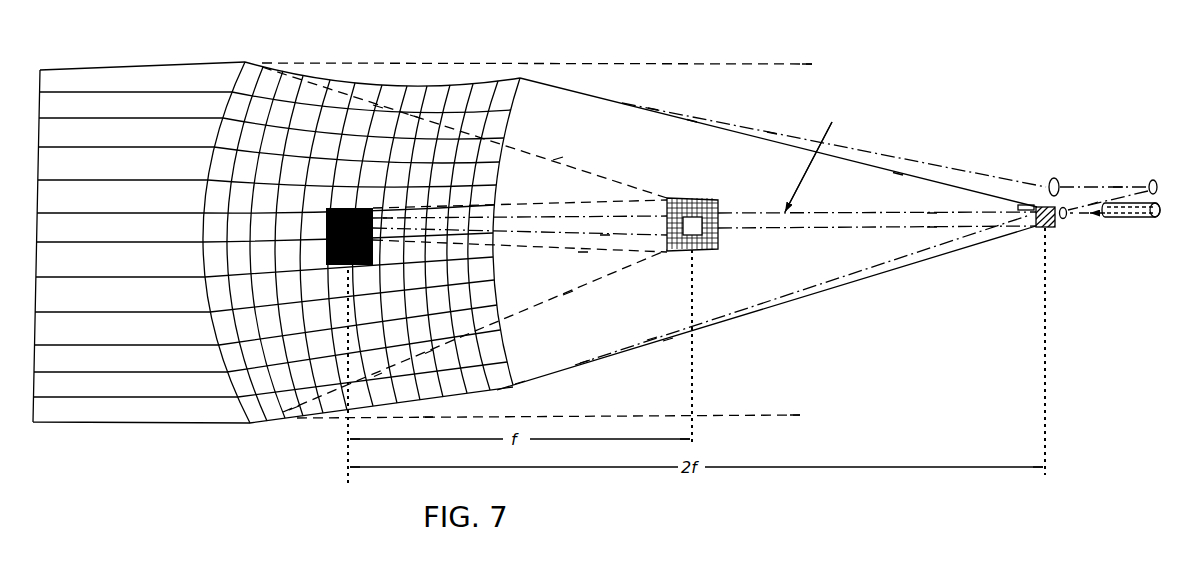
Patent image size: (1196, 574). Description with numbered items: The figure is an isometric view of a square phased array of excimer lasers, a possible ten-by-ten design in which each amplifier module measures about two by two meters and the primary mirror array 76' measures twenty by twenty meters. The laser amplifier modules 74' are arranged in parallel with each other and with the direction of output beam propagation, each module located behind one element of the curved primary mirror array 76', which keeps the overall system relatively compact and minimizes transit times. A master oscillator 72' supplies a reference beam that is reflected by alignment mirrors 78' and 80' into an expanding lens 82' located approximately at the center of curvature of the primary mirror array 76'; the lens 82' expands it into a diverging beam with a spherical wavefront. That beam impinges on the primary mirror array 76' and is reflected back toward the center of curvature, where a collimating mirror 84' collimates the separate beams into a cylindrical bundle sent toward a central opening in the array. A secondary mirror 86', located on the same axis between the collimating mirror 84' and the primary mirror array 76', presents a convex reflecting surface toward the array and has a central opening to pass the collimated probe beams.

The laser amplifier modules 74' is at (141, 227).
The primary mirror array 76' is at (351, 255).
The secondary mirror 86' is at (685, 196).
The collimating mirror 84' is at (1020, 249).
The expanding lens 82' is at (1016, 161).
The alignment mirror 80' is at (1171, 187).
The alignment mirror 78' is at (1065, 244).
The master oscillator 72' is at (1131, 241).